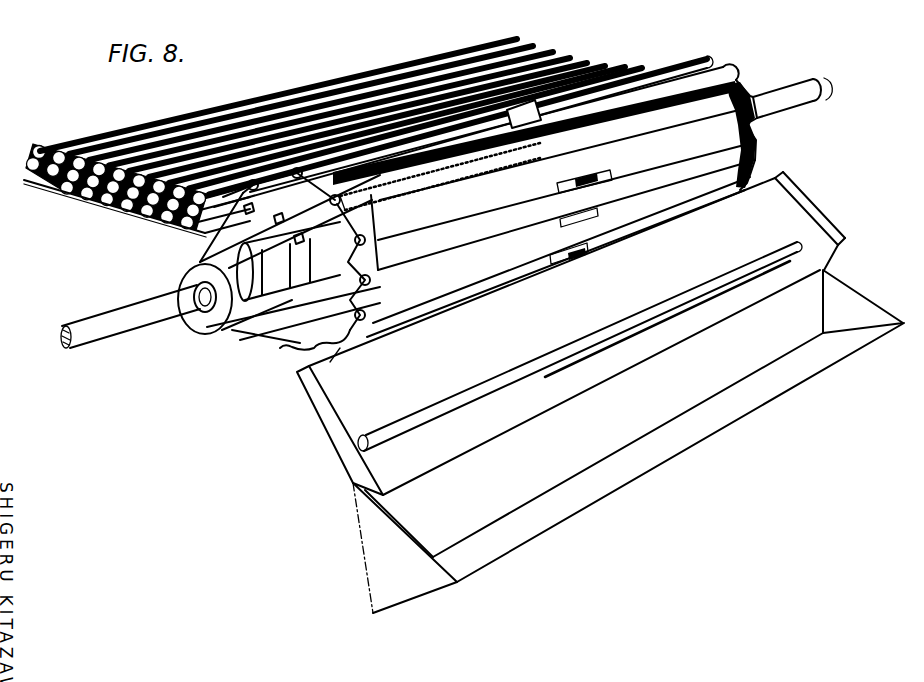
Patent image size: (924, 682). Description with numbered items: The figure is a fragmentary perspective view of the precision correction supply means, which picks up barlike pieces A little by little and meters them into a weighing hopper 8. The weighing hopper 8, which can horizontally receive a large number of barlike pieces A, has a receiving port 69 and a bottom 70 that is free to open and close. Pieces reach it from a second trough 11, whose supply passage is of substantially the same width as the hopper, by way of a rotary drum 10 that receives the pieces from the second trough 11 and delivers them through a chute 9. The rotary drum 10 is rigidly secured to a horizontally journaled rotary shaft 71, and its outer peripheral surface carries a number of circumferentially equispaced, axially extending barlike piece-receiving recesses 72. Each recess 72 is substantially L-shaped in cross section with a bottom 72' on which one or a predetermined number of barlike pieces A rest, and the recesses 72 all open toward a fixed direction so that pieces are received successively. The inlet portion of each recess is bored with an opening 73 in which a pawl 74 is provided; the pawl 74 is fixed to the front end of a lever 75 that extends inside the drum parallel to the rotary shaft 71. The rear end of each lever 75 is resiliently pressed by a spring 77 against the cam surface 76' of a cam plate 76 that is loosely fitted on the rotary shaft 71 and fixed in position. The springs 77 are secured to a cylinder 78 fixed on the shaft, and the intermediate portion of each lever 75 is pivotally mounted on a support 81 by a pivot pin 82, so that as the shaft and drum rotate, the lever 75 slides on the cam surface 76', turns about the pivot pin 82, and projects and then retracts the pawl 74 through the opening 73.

The weighing hopper 8 is at (522, 543).
The chute 9 is at (324, 425).
The rotary drum 10 is at (740, 95).
The second trough 11 is at (57, 190).
The receiving port 69 is at (600, 485).
The bottom 70 is at (536, 476).
The rotary shaft 71 is at (797, 108).
The barlike piece-receiving recess 72 is at (575, 275).
The bottom 72' is at (292, 365).
The opening 73 is at (586, 250).
The pawl 74 is at (487, 107).
The lever 75 is at (423, 192).
The cam plate 76 is at (179, 298).
The cam surface 76' is at (130, 317).
The spring 77 is at (240, 350).
The cylinder 78 is at (235, 342).
The support 81 is at (366, 283).
The pivot pin 82 is at (200, 238).
The barlike piece A is at (498, 382).